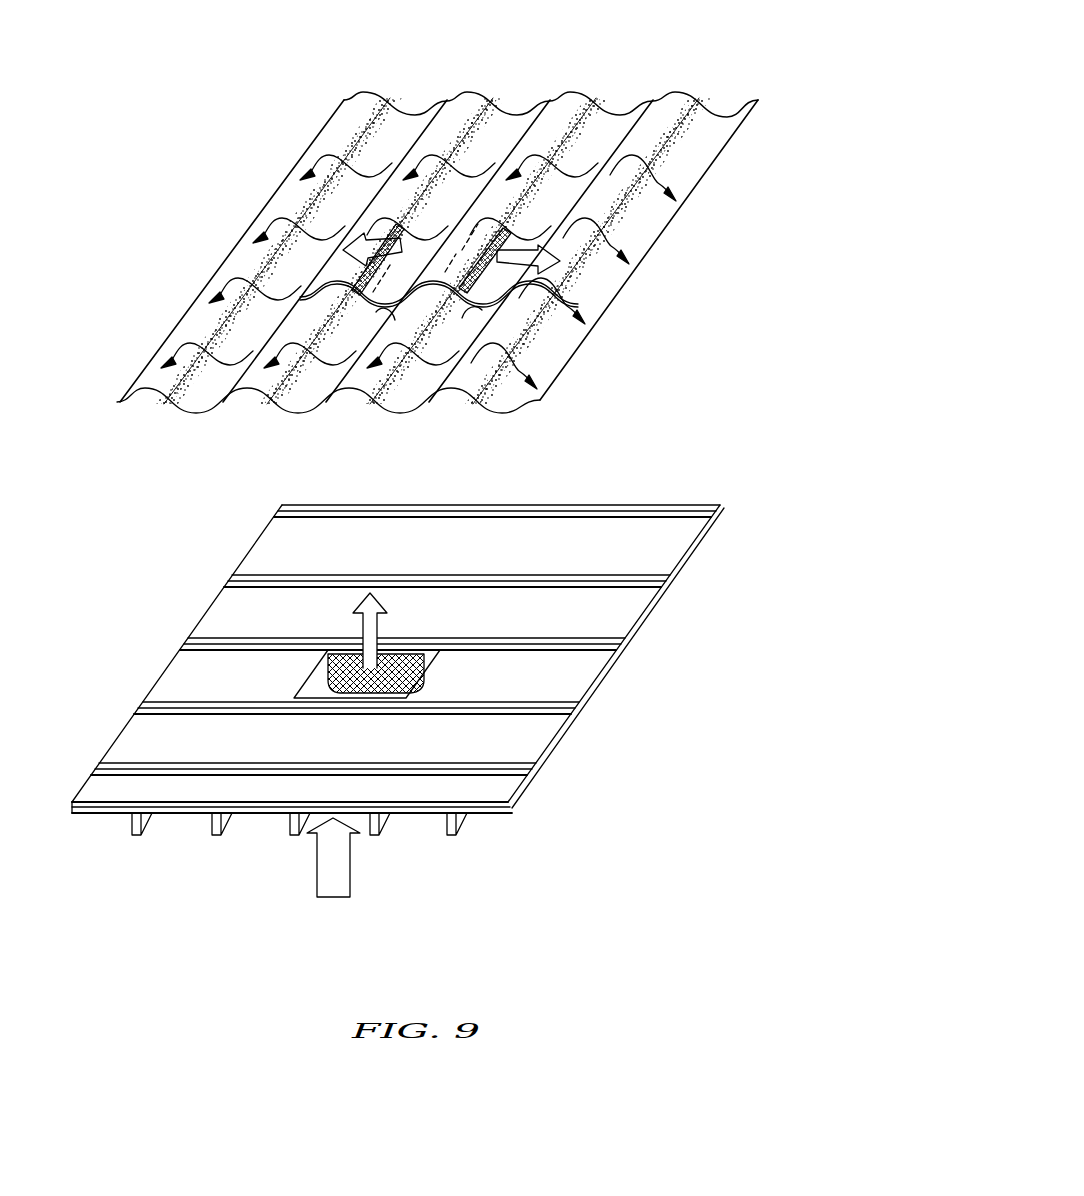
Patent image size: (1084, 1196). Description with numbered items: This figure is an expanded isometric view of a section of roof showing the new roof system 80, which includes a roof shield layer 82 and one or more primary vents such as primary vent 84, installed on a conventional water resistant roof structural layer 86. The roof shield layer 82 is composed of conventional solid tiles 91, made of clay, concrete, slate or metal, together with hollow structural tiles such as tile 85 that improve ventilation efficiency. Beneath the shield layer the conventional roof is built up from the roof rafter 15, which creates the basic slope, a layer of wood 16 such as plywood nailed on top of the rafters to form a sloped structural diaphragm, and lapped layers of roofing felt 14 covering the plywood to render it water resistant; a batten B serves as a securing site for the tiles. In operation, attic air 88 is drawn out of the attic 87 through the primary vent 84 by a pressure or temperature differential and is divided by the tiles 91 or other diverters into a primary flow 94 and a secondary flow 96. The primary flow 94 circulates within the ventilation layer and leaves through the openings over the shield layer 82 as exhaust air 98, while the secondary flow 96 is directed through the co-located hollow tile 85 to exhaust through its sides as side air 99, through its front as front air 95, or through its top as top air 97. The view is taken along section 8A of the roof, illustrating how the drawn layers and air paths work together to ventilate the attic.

The roof system 80 is at (236, 165).
The roof shield layer 82 is at (725, 97).
The tiles 91 is at (468, 120).
The front air 95 is at (330, 350).
The top air 97 is at (343, 233).
The exhaust air 98 is at (409, 178).
The side air 99 is at (265, 263).
The hollow structural tile 85 is at (575, 215).
The roofing felt 14 is at (621, 561).
The layer of wood 16 is at (488, 815).
The roof rafter 15 is at (446, 834).
The primary vent 84 is at (433, 682).
The primary flow 94 is at (437, 656).
The secondary flow 96 is at (376, 626).
The section line 8A is at (370, 692).
The batten B is at (580, 707).
The roof structural layer 86 is at (710, 660).
The attic 87 is at (263, 818).
The attic air 88 is at (348, 875).